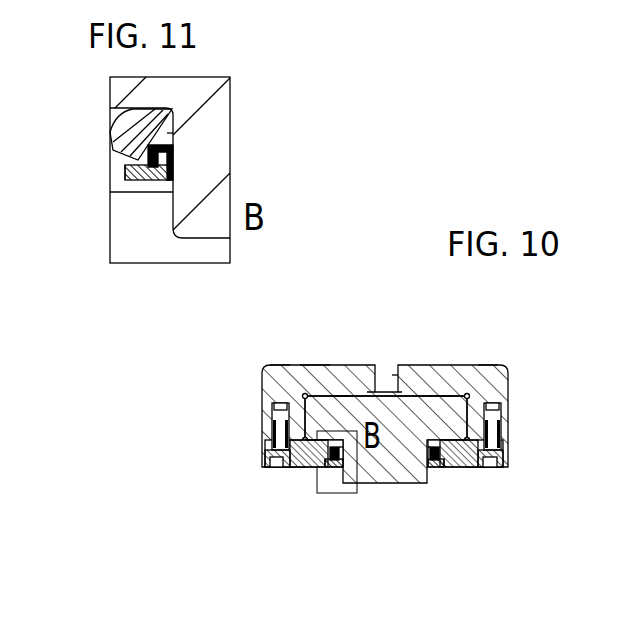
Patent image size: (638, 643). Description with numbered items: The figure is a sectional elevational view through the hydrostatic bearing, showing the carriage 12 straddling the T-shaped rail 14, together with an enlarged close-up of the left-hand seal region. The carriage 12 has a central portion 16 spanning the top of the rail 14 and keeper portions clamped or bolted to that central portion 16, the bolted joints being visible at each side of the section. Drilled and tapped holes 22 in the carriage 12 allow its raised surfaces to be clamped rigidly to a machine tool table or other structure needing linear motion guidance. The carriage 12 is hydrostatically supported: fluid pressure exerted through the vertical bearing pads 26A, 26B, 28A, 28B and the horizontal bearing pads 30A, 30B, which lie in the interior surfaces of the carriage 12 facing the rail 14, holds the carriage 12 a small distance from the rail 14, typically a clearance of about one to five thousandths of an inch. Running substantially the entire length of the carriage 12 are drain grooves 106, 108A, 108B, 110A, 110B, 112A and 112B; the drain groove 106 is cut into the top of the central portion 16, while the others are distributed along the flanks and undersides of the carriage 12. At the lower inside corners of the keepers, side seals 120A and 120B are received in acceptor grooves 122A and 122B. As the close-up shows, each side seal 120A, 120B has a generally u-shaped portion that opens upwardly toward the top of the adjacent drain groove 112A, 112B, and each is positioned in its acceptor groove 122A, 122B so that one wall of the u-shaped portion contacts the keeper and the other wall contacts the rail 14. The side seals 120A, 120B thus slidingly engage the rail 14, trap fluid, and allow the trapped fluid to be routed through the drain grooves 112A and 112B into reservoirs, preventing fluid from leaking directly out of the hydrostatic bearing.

In FIG. 10, the carriage 12 is at (514, 372).
In FIG. 11, the rail 14 is at (200, 167).
In FIG. 10, the rail 14 is at (412, 470).
In FIG. 10, the central portion 16 is at (316, 370).
In FIG. 10, the drilled and tapped holes 22 is at (393, 375).
In FIG. 10, the vertical bearing pad 26A is at (441, 394).
In FIG. 10, the vertical bearing pad 26B is at (340, 394).
In FIG. 10, the vertical bearing pad 28A is at (468, 440).
In FIG. 11, the vertical bearing pad 28B is at (112, 138).
In FIG. 10, the vertical bearing pad 28B is at (285, 426).
In FIG. 10, the horizontal bearing pad 30A is at (505, 432).
In FIG. 10, the horizontal bearing pad 30B is at (275, 407).
In FIG. 10, the drain groove 106 is at (376, 367).
In FIG. 10, the drain groove 108A is at (486, 372).
In FIG. 10, the drain groove 108B is at (287, 368).
In FIG. 10, the drain groove 110A is at (476, 467).
In FIG. 10, the drain groove 110B is at (310, 467).
In FIG. 10, the drain groove 112A is at (398, 452).
In FIG. 11, the drain groove 112B is at (167, 133).
In FIG. 10, the drain groove 112B is at (346, 470).
In FIG. 10, the side seal 120A is at (440, 467).
In FIG. 11, the side seal 120B is at (138, 181).
In FIG. 10, the side seal 120B is at (330, 467).
In FIG. 10, the acceptor groove 122A is at (458, 467).
In FIG. 11, the acceptor groove 122B is at (124, 172).
In FIG. 10, the acceptor groove 122B is at (315, 467).